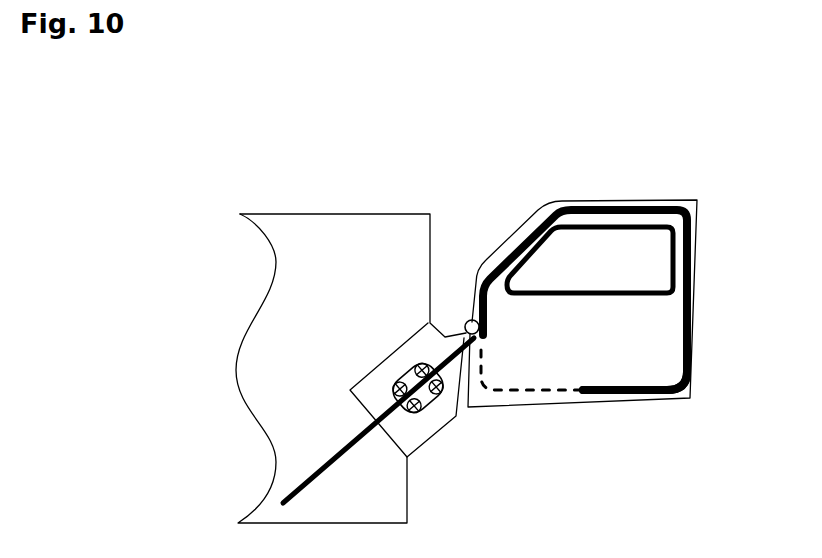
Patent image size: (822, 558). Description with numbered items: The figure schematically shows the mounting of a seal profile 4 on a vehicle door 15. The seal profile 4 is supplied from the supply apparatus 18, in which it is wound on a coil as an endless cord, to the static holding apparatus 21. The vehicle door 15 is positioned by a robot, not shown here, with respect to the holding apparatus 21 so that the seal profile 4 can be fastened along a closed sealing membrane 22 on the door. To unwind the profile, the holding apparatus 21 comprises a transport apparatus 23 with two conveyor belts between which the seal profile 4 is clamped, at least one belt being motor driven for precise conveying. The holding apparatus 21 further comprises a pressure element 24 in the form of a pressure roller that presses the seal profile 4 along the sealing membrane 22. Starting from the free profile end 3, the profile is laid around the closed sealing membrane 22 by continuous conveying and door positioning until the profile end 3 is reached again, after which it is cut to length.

The supply apparatus 18 is at (283, 169).
The holding apparatus 21 is at (425, 440).
The transport apparatus 23 is at (447, 410).
The pressure element 24 is at (470, 318).
The vehicle door 15 is at (700, 199).
The seal profile 4 is at (693, 338).
The profile end 3 is at (585, 392).
The sealing membrane 22 is at (522, 392).